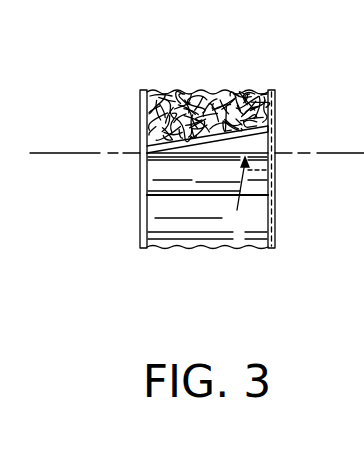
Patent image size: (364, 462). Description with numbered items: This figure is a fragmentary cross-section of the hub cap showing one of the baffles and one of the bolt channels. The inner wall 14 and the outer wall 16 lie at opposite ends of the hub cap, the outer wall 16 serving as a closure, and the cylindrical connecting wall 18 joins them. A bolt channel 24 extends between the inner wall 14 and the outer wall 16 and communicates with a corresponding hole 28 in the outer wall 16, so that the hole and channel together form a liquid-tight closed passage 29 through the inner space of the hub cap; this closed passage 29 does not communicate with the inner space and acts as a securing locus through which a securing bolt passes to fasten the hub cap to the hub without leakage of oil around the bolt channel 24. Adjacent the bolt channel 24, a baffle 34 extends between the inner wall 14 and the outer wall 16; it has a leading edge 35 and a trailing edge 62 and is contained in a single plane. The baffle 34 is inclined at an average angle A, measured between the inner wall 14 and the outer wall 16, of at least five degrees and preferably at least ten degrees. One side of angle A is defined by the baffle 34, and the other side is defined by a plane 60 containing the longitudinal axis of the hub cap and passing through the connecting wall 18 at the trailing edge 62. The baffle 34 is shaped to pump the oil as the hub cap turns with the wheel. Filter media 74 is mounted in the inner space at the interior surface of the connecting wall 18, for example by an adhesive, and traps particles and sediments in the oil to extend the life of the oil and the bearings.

The inner wall 14 is at (140, 232).
The outer wall 16 is at (275, 237).
The connecting wall 18 is at (235, 247).
The bolt channel 24 is at (140, 180).
The hole 28 is at (270, 193).
The closed passage 29 is at (270, 181).
The baffle 34 is at (176, 146).
The leading edge 35 is at (264, 90).
The plane 60 is at (60, 153).
The trailing edge 62 is at (140, 146).
The filter media 74 is at (173, 93).
The angle A is at (243, 127).